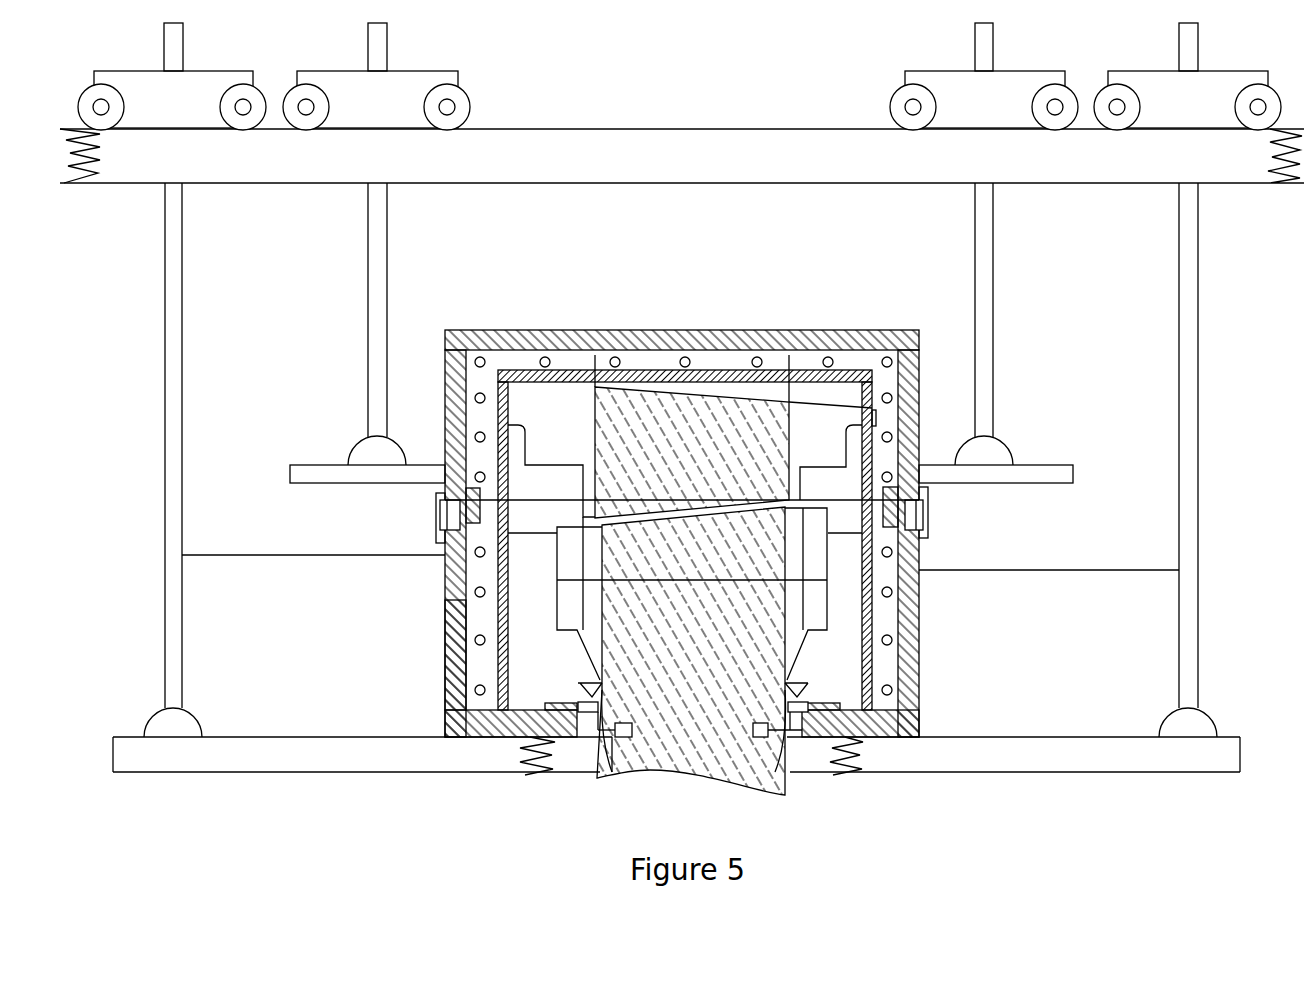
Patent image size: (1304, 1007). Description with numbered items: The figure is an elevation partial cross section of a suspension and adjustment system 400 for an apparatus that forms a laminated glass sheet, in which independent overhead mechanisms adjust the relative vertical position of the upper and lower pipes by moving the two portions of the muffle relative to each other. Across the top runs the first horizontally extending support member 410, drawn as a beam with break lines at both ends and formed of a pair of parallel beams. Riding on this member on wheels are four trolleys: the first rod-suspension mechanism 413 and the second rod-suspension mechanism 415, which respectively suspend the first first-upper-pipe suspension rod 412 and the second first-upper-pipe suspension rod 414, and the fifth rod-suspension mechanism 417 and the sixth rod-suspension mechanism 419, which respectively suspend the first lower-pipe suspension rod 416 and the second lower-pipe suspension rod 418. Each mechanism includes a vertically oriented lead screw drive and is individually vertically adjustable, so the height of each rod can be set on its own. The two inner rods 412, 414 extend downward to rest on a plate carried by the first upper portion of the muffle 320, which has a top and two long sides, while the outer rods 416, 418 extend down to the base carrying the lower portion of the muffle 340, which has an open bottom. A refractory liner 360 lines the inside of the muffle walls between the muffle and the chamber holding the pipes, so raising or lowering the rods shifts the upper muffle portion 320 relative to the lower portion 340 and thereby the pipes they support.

The first upper portion of the muffle 320 is at (445, 415).
The lower portion of the muffle 340 is at (445, 640).
The refractory liner 360 is at (498, 448).
The adjustment system 400 is at (320, 811).
The first horizontally extending support member 410 is at (570, 162).
The first first-upper-pipe suspension rod 412 is at (377, 227).
The first rod-suspension mechanism 413 is at (395, 110).
The second first-upper-pipe suspension rod 414 is at (984, 214).
The second rod-suspension mechanism 415 is at (1002, 110).
The first lower-pipe suspension rod 416 is at (175, 447).
The fifth rod-suspension mechanism 417 is at (191, 110).
The second lower-pipe suspension rod 418 is at (1186, 325).
The sixth rod-suspension mechanism 419 is at (1206, 110).